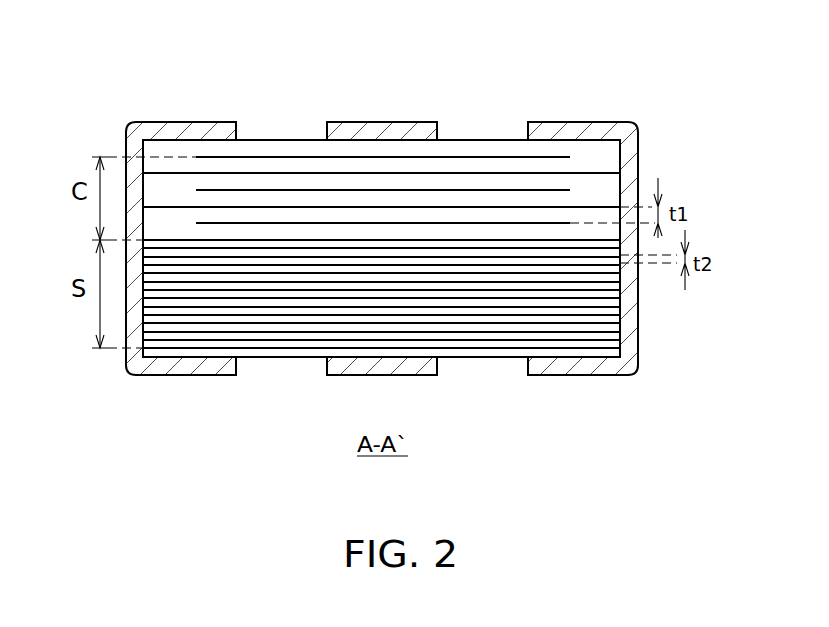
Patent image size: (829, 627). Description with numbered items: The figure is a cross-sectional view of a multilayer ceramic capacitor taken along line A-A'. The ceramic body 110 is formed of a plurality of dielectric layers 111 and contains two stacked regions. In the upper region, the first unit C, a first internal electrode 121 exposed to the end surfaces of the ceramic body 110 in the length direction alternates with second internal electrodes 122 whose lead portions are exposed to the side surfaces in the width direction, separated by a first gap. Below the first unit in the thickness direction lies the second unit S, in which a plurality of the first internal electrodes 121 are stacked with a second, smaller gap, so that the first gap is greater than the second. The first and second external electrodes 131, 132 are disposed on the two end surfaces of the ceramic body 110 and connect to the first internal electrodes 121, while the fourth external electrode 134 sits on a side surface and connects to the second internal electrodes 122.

The ceramic body 110 is at (485, 138).
The dielectric layer 111 is at (608, 190).
The first internal electrode 121 is at (275, 173).
The second internal electrode 122 is at (308, 157).
The first external electrode 131 is at (197, 132).
The second external electrode 132 is at (573, 130).
The fourth external electrode 134 is at (422, 130).